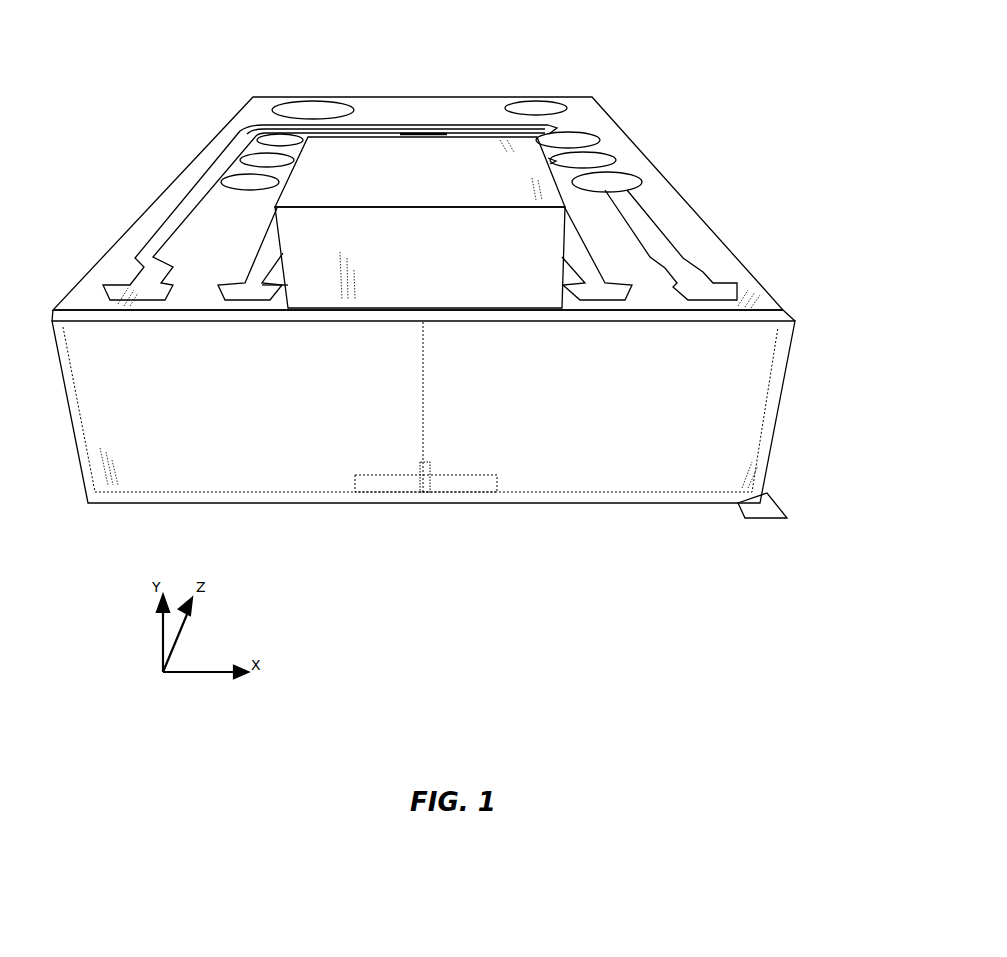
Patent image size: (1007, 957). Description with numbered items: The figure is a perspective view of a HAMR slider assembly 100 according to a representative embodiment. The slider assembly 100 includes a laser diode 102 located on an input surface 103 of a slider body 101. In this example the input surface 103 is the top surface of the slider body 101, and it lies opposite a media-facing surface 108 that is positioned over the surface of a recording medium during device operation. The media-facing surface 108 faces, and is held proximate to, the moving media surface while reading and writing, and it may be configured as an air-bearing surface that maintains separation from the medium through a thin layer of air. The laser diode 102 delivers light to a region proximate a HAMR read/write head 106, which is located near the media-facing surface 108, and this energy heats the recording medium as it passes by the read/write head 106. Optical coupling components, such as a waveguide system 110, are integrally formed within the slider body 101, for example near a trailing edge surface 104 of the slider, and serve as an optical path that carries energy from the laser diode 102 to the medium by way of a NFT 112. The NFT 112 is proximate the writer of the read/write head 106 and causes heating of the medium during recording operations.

The HAMR slider assembly 100 is at (604, 45).
The slider body 101 is at (230, 125).
The laser diode 102 is at (380, 147).
The input surface 103 is at (113, 267).
The trailing edge surface 104 is at (147, 482).
The HAMR read/write head 106 is at (431, 492).
The media-facing surface 108 is at (777, 520).
The waveguide system 110 is at (424, 390).
The NFT 112 is at (426, 492).